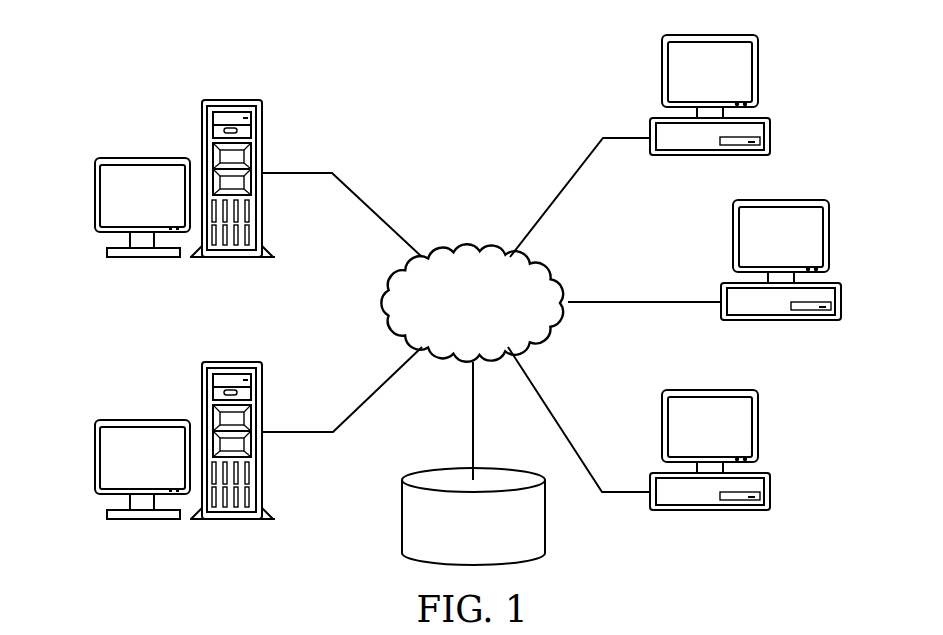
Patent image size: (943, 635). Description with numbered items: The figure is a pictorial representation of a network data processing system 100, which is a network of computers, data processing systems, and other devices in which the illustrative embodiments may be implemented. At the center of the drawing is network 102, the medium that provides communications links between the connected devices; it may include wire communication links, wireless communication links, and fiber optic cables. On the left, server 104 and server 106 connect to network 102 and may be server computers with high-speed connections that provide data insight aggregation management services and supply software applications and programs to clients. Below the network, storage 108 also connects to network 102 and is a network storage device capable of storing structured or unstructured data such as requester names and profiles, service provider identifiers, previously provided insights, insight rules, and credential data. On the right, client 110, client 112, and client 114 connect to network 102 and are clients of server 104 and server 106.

The network data processing system 100 is at (336, 79).
The network 102 is at (448, 248).
The server 104 is at (95, 197).
The server 106 is at (95, 456).
The storage 108 is at (402, 512).
The client 110 is at (770, 127).
The client 112 is at (842, 308).
The client 114 is at (770, 497).